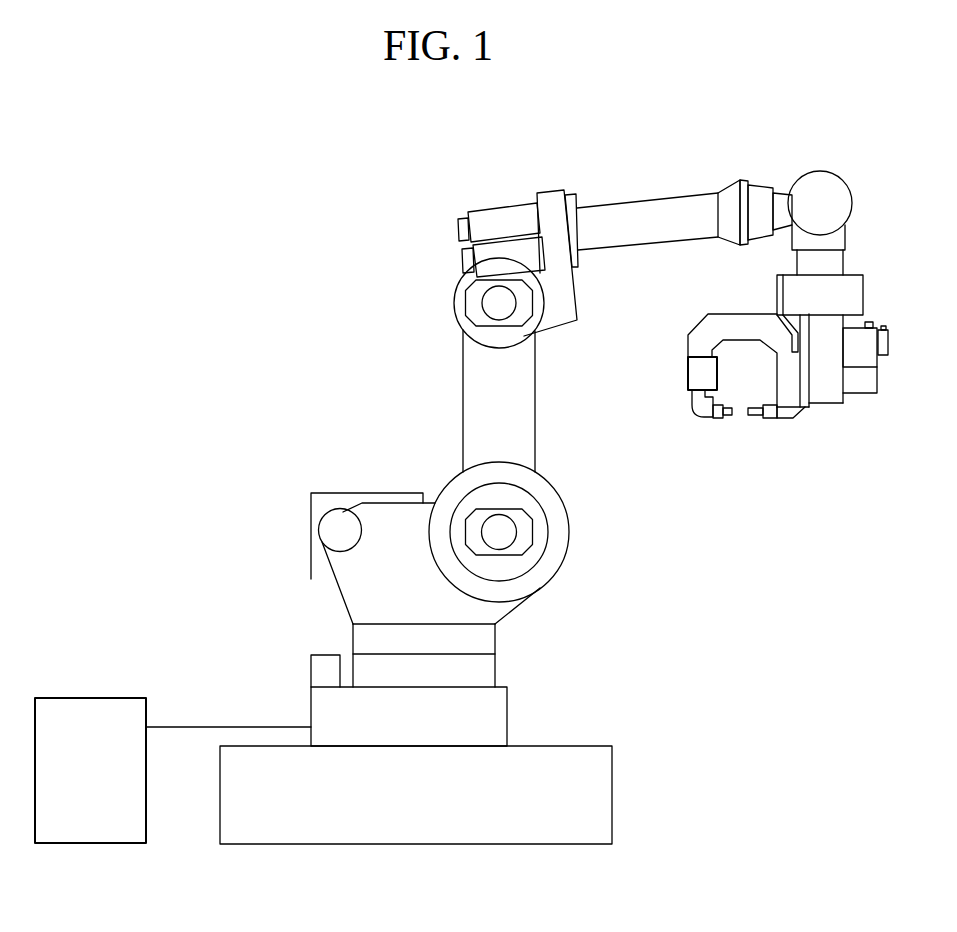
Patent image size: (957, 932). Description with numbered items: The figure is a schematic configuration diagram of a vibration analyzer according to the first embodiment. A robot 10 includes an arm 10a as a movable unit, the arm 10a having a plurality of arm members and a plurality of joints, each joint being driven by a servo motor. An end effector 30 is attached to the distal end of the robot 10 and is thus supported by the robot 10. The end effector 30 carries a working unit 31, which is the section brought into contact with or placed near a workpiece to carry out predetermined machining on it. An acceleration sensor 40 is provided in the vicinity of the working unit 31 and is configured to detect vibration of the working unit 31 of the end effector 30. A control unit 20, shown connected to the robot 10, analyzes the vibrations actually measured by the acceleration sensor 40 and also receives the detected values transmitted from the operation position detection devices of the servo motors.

The robot 10 is at (530, 507).
The arm 10a is at (463, 372).
The control unit 20 is at (85, 697).
The end effector 30 is at (750, 382).
The working unit 31 is at (719, 420).
The acceleration sensor 40 is at (700, 372).